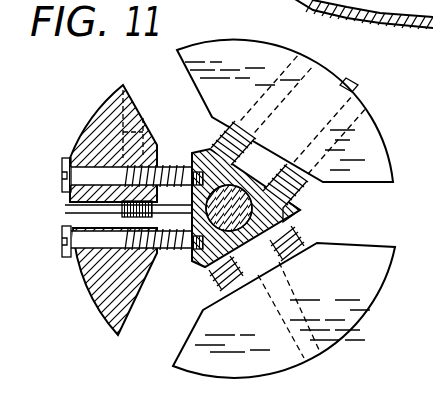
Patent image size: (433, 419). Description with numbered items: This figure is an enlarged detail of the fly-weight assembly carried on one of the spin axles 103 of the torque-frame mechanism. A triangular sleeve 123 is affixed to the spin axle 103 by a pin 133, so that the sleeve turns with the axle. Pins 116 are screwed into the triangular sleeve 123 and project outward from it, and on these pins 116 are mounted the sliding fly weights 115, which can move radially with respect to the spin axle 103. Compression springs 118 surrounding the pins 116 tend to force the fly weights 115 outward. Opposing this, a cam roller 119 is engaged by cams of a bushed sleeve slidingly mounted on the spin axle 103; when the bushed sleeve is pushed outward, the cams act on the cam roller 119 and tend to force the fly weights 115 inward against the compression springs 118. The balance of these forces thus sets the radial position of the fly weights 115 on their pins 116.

The spin axle 103 is at (229, 208).
The sliding fly weight 115 is at (380, 124).
The pin 116 is at (88, 172).
The compression spring 118 is at (295, 188).
The cam roller 119 is at (66, 208).
The triangular sleeve 123 is at (192, 152).
The pin 133 is at (298, 213).